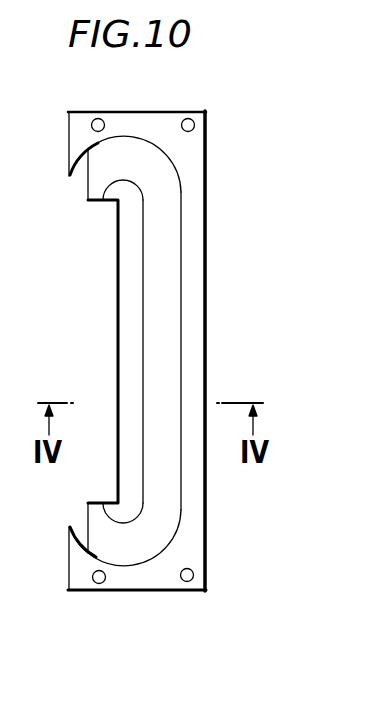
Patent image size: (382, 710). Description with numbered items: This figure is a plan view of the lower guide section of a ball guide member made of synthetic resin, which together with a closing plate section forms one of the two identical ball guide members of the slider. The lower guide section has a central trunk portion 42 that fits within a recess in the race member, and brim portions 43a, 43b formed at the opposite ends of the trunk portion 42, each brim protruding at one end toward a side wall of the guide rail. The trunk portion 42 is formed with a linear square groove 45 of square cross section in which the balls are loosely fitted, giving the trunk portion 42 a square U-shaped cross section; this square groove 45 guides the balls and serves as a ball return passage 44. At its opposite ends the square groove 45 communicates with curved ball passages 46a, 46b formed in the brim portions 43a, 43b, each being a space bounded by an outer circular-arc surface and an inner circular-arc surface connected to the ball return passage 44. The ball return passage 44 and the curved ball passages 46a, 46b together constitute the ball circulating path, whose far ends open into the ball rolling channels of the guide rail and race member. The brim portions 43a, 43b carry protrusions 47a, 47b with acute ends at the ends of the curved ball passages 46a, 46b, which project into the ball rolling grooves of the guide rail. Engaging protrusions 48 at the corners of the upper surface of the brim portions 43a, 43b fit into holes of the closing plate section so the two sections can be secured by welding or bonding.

The trunk portion 42 is at (197, 312).
The brim portion 43a is at (138, 117).
The brim portion 43b is at (137, 584).
The ball return passage 44 is at (178, 356).
The square groove 45 is at (178, 258).
The curved ball passage 46a is at (170, 166).
The curved ball passage 46b is at (175, 510).
The protrusion 47a is at (77, 152).
The protrusion 47b is at (70, 548).
The engaging protrusions 48 is at (99, 118).